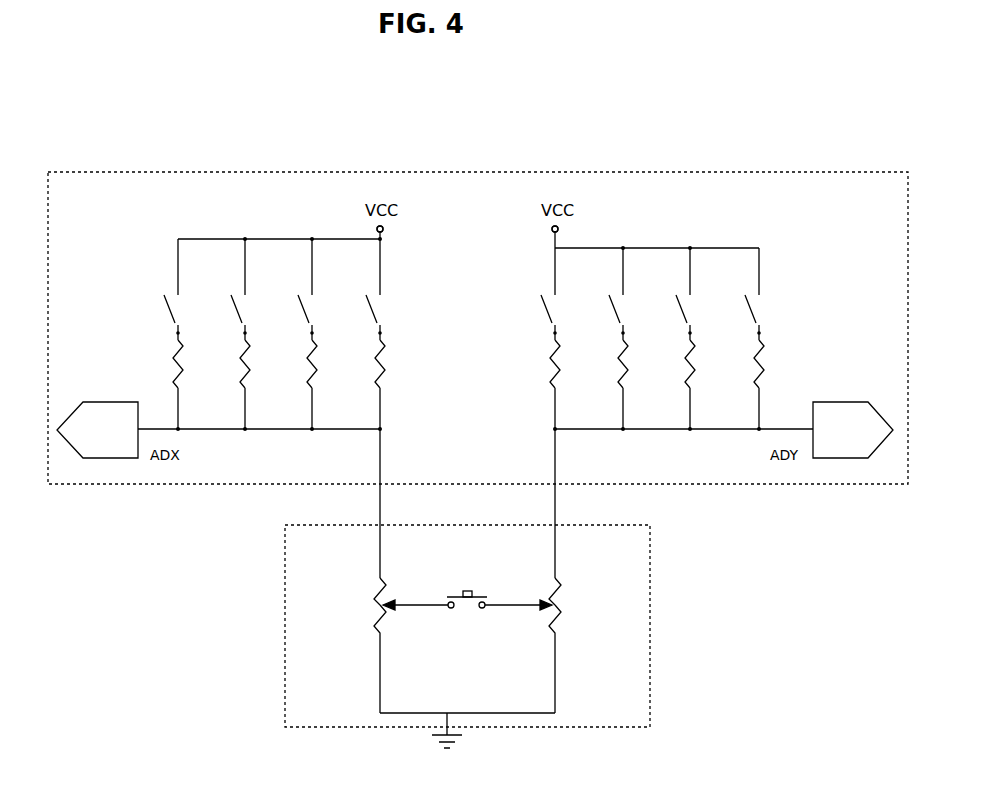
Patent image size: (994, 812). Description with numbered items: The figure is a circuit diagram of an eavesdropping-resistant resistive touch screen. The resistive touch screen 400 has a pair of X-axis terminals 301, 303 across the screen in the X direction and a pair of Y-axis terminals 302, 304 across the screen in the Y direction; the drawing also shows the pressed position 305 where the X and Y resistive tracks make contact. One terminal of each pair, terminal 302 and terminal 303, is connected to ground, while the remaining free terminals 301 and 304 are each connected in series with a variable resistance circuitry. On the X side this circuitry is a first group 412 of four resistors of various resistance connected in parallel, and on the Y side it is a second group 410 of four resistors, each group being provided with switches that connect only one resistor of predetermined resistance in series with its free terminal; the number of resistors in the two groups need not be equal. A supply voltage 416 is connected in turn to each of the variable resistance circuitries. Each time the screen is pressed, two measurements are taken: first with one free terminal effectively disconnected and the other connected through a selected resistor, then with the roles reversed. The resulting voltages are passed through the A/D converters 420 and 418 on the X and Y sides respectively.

The first group of resistors 412 is at (280, 228).
The second group of resistors 410 is at (666, 237).
The voltage VCC 416 is at (548, 228).
The A/D converter 420 is at (70, 408).
The A/D converter 418 is at (852, 402).
The resistive touch screen 400 is at (267, 656).
The X-axis terminal 301 is at (378, 550).
The X-axis terminal 303 is at (378, 663).
The Y-axis terminal 304 is at (560, 552).
The Y-axis terminal 302 is at (557, 652).
The touch contact switch 305 is at (466, 608).